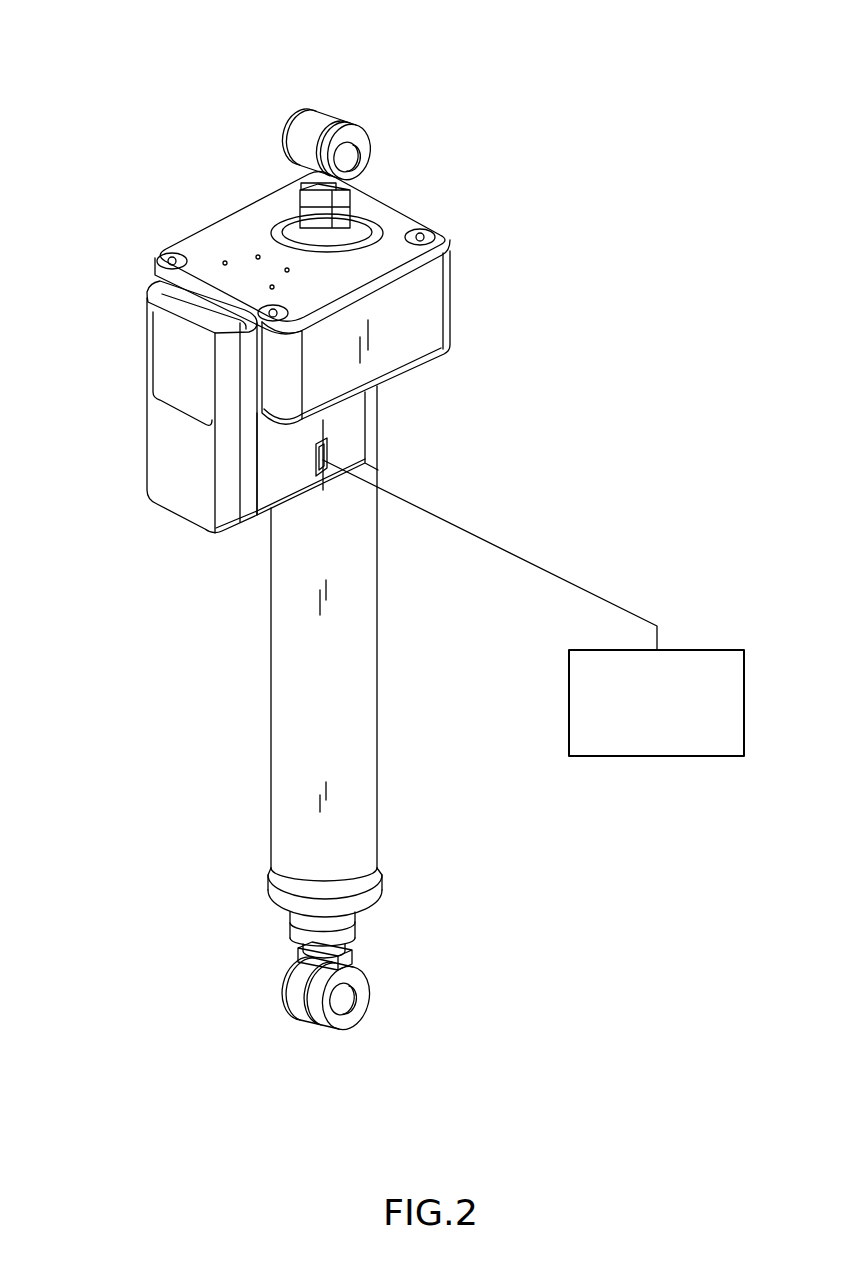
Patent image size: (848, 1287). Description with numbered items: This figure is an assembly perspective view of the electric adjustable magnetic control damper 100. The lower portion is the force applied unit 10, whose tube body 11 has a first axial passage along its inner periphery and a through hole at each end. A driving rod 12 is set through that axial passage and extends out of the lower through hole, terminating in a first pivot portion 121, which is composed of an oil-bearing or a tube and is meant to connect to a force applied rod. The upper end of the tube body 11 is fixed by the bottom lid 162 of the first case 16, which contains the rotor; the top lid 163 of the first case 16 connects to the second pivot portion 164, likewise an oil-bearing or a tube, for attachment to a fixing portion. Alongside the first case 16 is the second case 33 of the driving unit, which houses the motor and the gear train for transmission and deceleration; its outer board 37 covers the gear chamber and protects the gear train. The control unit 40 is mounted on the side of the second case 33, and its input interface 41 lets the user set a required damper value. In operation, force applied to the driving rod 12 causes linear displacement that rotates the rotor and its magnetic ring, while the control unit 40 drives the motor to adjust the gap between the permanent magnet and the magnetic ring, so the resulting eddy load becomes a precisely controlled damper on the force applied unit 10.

The electric adjustable magnetic control damper 100 is at (85, 34).
The force applied unit 10 is at (402, 765).
The tube body 11 is at (363, 833).
The driving rod 12 is at (340, 924).
The first pivot portion 121 is at (350, 993).
The first case 16 is at (428, 302).
The bottom lid 162 is at (418, 363).
The top lid 163 is at (397, 223).
The second pivot portion 164 is at (340, 176).
The second case 33 is at (268, 492).
The outer board 37 is at (183, 495).
The control unit 40 is at (533, 608).
The input interface 41 is at (325, 449).